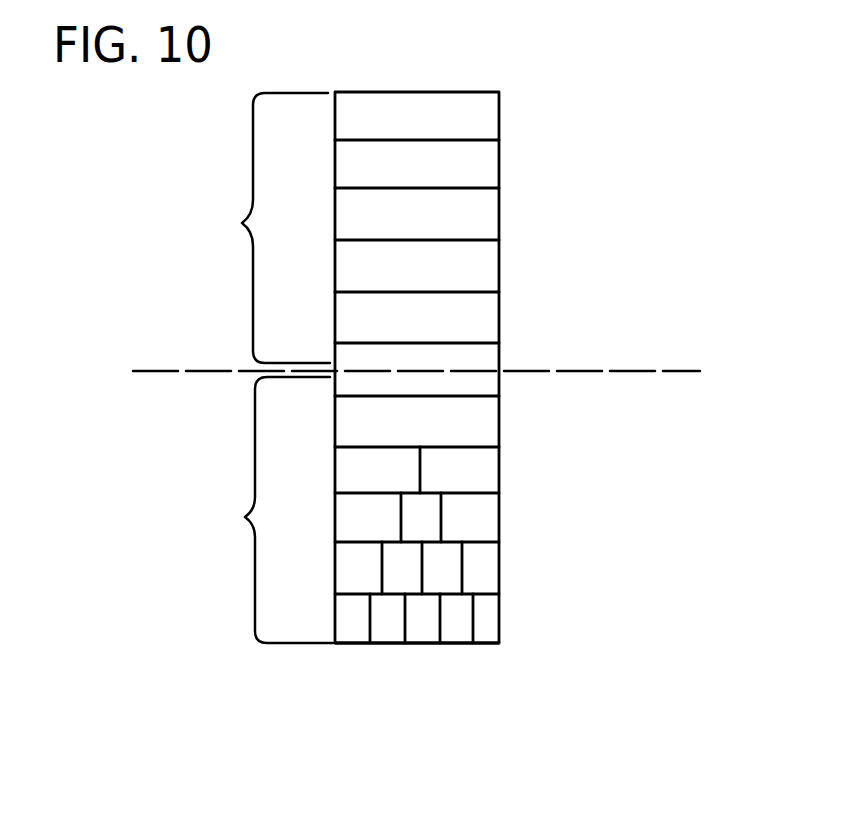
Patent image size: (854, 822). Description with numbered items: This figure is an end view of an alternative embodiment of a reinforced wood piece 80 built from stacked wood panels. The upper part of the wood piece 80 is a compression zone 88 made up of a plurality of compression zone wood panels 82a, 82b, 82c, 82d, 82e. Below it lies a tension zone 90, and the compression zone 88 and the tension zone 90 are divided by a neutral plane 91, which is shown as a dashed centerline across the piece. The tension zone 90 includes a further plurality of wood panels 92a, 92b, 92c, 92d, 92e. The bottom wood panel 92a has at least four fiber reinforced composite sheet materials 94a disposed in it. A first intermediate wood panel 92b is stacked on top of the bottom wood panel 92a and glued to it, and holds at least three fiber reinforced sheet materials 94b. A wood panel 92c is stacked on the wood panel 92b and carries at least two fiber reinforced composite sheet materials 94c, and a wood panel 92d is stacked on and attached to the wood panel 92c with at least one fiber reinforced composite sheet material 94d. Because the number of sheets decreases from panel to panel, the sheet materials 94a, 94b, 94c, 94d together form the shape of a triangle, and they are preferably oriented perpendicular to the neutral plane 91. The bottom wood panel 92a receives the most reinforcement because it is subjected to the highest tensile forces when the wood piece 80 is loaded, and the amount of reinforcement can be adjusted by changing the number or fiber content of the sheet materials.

The wood piece 80 is at (606, 197).
The compression zone wood panel 82a is at (499, 113).
The compression zone wood panel 82b is at (499, 165).
The compression zone wood panel 82c is at (499, 220).
The compression zone wood panel 82d is at (499, 270).
The compression zone wood panel 82e is at (499, 318).
The compression zone 88 is at (242, 223).
The tension zone 90 is at (245, 517).
The neutral plane 91 is at (170, 370).
The bottom wood panel 92a is at (499, 617).
The first intermediate wood panel 92b is at (499, 560).
The wood panel 92c is at (499, 512).
The wood panel 92d is at (499, 463).
The wood panel 92e is at (499, 416).
The fiber reinforced composite sheet materials 94a is at (473, 622).
The fiber reinforced sheet materials 94b is at (463, 573).
The fiber reinforced composite sheet materials 94c is at (442, 520).
The fiber reinforced composite sheet material 94d is at (423, 467).